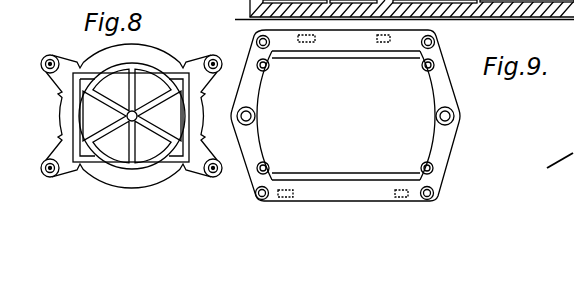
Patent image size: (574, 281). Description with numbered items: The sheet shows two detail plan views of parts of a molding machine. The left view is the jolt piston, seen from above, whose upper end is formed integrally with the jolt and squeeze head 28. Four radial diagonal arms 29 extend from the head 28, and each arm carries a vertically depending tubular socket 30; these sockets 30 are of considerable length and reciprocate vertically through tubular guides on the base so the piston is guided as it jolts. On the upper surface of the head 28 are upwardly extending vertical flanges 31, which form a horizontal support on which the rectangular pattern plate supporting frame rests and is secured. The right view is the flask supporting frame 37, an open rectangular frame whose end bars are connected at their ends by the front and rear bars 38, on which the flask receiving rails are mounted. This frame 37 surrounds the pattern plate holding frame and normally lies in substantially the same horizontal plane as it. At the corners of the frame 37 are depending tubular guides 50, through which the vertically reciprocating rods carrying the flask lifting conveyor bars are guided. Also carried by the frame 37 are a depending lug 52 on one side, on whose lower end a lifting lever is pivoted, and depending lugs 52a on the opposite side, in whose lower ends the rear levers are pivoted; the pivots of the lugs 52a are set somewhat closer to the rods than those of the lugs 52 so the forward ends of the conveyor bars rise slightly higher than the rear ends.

In FIG. 8, the jolt and squeeze head 28 is at (117, 152).
In FIG. 8, the radial diagonal arms 29 is at (193, 63).
In FIG. 8, the tubular sockets 30 is at (51, 62).
In FIG. 8, the vertical flanges 31 is at (115, 152).
In FIG. 9, the flask supporting frame 37 is at (255, 145).
In FIG. 9, the front and rear bars 38 is at (411, 49).
In FIG. 9, the tubular guides 50 is at (267, 45).
In FIG. 9, the depending lug 52 is at (375, 42).
In FIG. 9, the depending lugs 52a is at (398, 192).